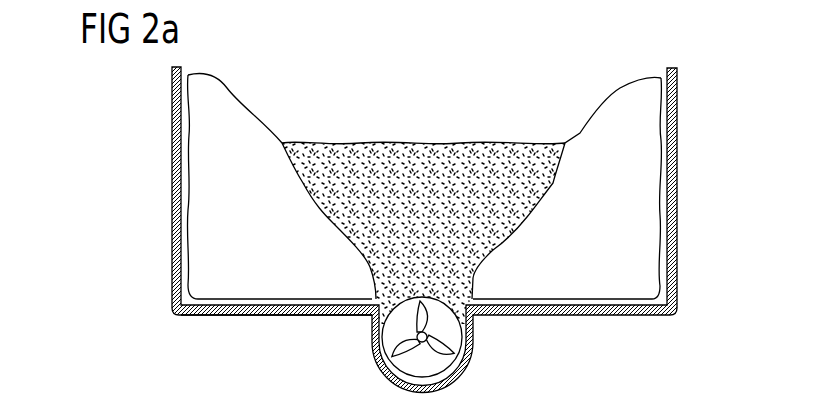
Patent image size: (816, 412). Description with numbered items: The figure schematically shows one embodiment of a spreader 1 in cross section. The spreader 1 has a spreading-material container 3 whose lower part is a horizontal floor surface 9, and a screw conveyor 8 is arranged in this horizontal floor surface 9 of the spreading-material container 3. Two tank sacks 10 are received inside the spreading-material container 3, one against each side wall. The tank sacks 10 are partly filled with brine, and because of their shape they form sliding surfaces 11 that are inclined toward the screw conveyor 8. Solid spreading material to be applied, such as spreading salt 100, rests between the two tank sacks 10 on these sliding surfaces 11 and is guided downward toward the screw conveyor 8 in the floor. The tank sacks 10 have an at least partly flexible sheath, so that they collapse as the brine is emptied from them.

The spreader 1 is at (122, 110).
The spreading-material container 3 is at (171, 250).
The screw conveyor 8 is at (447, 357).
The horizontal floor surface 9 is at (294, 317).
The tank sacks 10 is at (198, 203).
The sliding surfaces 11 is at (268, 127).
The spreading salt 100 is at (443, 157).